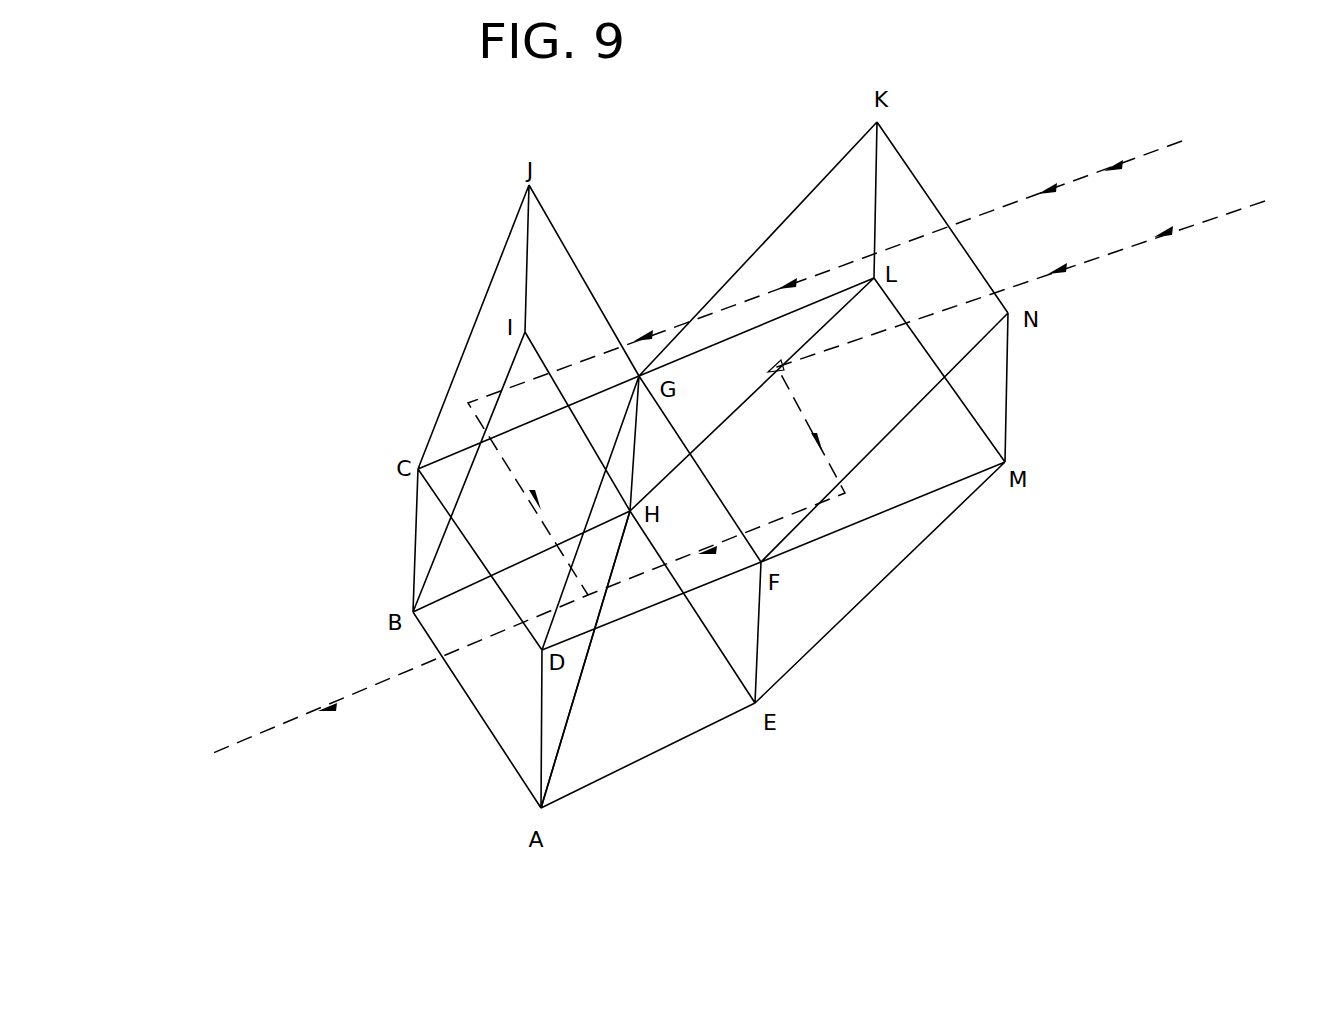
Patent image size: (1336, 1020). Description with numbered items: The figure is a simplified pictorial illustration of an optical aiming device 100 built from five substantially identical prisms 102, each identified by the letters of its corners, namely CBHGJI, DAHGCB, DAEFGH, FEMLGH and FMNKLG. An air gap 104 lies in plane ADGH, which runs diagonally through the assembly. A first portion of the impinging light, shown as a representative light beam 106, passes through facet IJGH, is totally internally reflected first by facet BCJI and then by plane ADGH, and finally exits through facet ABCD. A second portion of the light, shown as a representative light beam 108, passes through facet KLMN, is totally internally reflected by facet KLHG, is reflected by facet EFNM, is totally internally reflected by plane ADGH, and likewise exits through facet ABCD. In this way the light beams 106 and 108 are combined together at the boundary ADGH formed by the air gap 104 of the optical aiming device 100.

The optical aiming device 100 is at (393, 223).
The prisms 102 is at (472, 348).
The air gap 104 is at (573, 709).
The light beam 106 is at (1110, 167).
The light beam 108 is at (1163, 237).